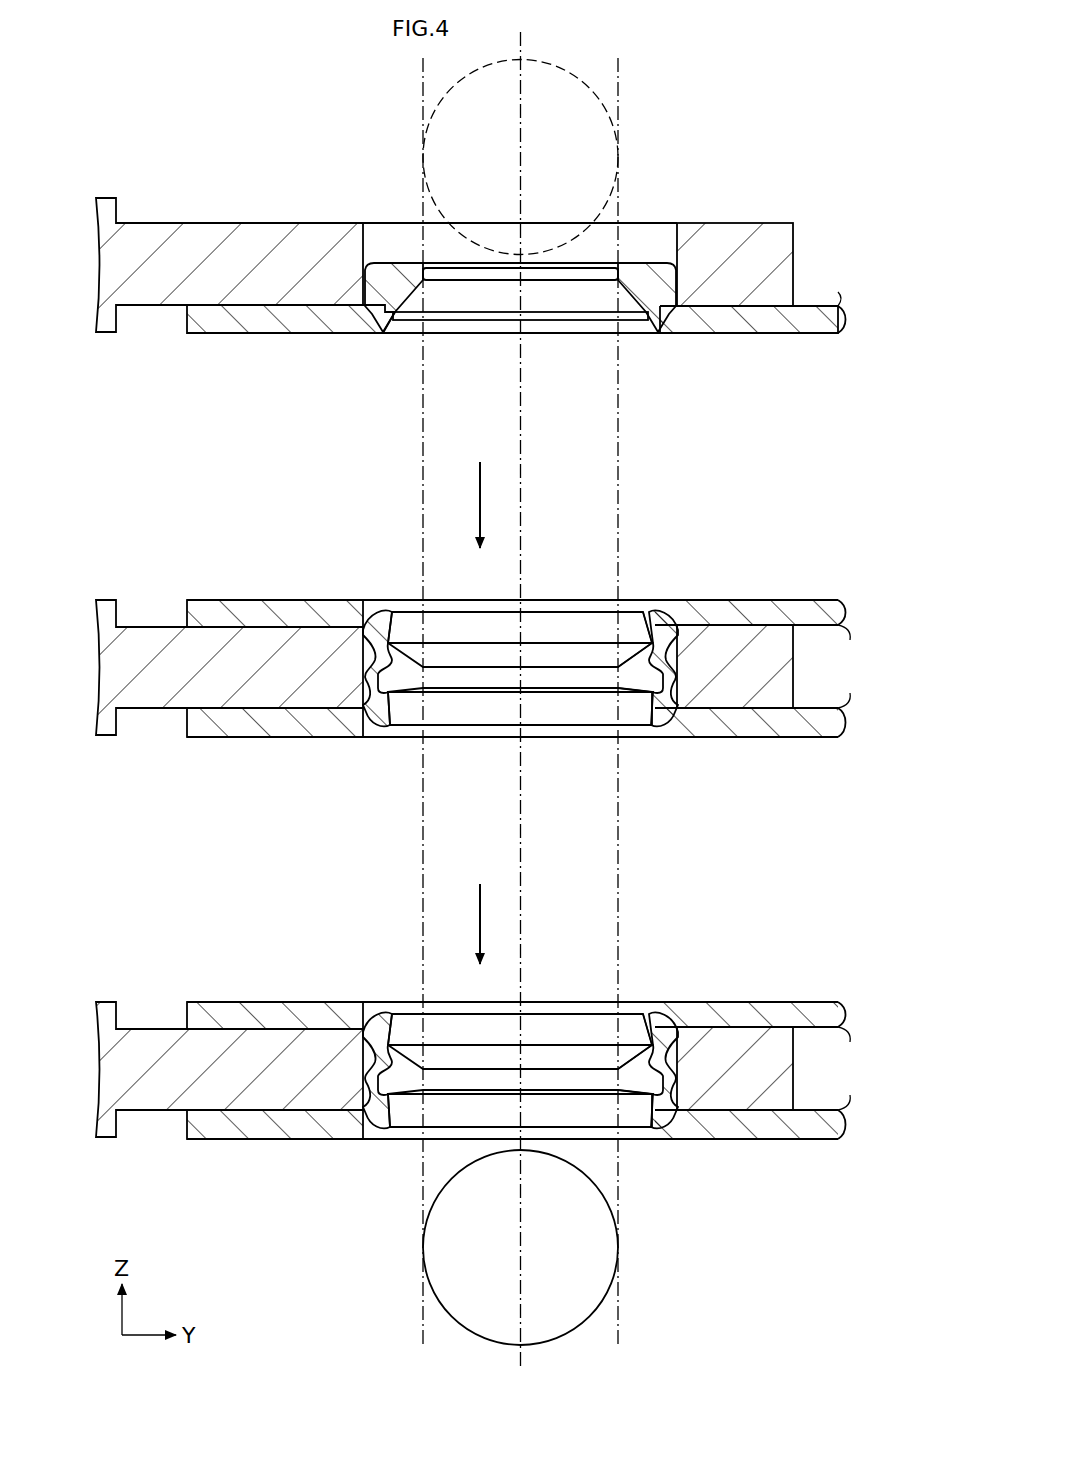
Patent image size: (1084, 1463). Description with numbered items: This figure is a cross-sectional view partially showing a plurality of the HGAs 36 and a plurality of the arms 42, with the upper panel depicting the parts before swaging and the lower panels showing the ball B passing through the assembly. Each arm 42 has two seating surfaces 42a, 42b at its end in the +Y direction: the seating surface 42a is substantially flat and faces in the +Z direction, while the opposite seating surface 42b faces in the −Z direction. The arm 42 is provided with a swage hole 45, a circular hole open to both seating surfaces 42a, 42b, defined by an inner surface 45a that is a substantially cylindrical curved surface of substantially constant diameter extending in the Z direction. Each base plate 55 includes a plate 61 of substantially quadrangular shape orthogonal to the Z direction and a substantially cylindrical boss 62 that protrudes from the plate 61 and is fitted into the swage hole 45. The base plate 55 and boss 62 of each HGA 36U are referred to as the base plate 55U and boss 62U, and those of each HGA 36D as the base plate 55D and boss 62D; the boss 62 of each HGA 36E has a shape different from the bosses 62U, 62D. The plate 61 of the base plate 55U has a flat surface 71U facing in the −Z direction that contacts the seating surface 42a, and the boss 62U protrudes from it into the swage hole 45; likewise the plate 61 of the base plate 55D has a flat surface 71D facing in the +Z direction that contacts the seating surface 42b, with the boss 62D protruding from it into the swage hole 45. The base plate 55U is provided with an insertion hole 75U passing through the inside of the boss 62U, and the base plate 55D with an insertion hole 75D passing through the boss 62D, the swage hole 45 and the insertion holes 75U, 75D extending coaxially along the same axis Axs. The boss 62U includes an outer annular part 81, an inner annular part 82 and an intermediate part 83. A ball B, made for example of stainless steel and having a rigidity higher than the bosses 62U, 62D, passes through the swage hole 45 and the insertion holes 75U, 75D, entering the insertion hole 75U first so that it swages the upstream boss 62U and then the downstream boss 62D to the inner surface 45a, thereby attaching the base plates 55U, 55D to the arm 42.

The HGA 36 is at (641, 719).
The HGA 36E is at (822, 304).
The HGA 36U is at (830, 598).
The HGA 36D is at (830, 739).
The arm 42 is at (150, 242).
The seating surface 42a is at (185, 223).
The seating surface 42b is at (150, 335).
The swage hole 45 is at (493, 641).
The inner surface 45a is at (380, 1007).
The base plate 55 is at (725, 335).
The base plate 55U is at (760, 600).
The base plate 55D is at (730, 739).
The plate 61 is at (285, 322).
The boss 62 is at (493, 654).
The boss 62U is at (398, 612).
The boss 62D is at (395, 730).
The flat surface 71U is at (822, 627).
The flat surface 71D is at (822, 708).
The insertion hole 75U is at (573, 610).
The insertion hole 75D is at (585, 715).
The outer annular part 81 is at (655, 640).
The inner annular part 82 is at (640, 694).
The intermediate part 83 is at (643, 614).
The ball B is at (595, 80).
The axis Axs is at (522, 38).